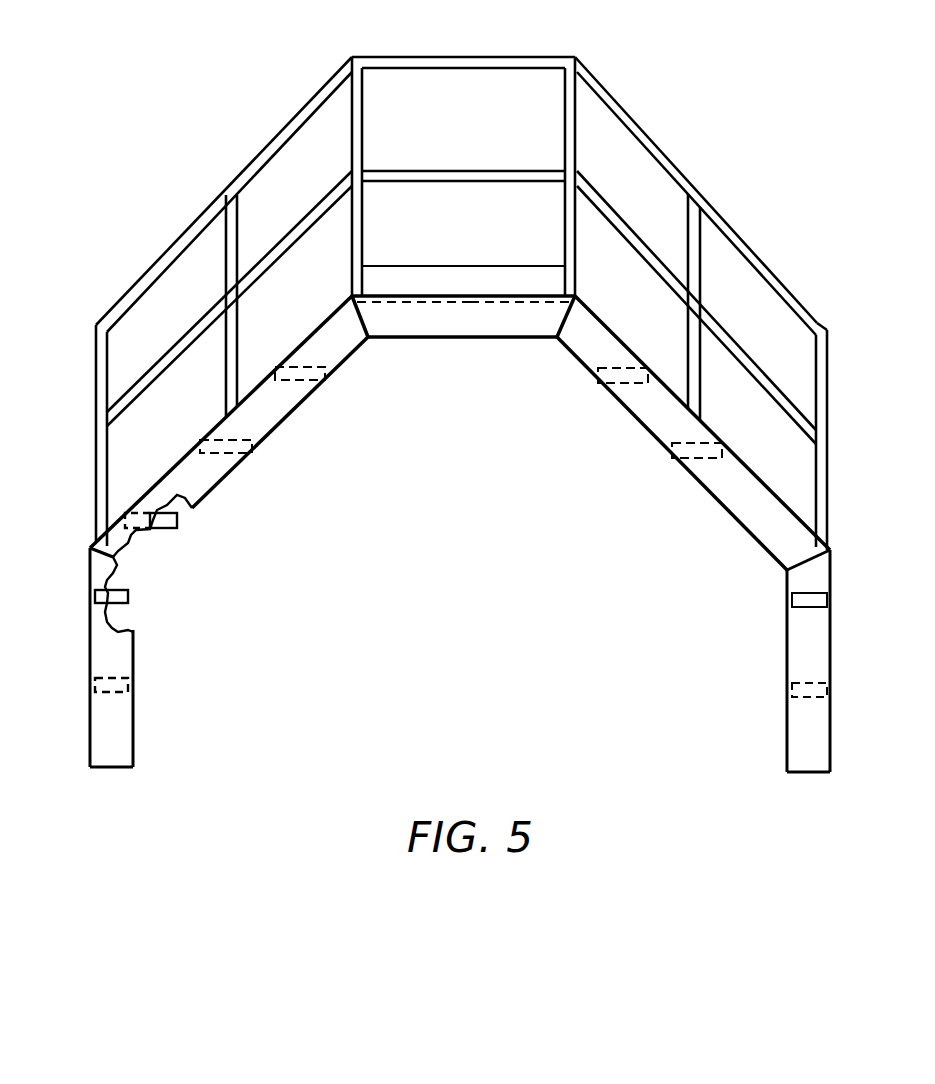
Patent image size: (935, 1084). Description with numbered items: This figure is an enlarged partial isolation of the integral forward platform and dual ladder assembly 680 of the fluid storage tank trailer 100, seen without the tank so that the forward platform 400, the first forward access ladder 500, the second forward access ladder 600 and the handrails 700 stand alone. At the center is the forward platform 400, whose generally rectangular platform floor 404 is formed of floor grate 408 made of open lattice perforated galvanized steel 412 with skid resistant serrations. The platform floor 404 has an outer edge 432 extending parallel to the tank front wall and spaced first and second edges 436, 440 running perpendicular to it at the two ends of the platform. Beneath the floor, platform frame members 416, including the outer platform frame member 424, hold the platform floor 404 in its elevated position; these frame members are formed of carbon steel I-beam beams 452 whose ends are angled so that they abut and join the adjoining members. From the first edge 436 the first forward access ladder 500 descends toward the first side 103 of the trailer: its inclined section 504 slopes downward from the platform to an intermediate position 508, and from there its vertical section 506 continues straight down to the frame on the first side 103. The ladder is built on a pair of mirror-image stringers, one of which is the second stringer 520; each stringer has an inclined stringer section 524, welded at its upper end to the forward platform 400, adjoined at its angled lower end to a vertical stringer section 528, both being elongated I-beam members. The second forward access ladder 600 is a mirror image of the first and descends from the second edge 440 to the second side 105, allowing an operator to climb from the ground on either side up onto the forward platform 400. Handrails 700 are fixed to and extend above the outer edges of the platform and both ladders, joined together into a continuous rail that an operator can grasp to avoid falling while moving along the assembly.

The fluid storage tank trailer 100 is at (483, 752).
The first side 103 is at (81, 656).
The second side 105 is at (838, 727).
The forward platform 400 is at (463, 257).
The platform floor 404 is at (415, 298).
The floor grate 408 is at (540, 369).
The open lattice perforated galvanized steel 412 is at (539, 305).
The platform frame members 416 is at (306, 419).
The outer platform frame member 424 is at (395, 330).
The outer edge 432 is at (459, 305).
The first edge 436 is at (338, 289).
The second edge 440 is at (583, 290).
The beams 452 is at (508, 326).
The first forward access ladder 500 is at (265, 420).
The inclined section 504 is at (257, 430).
The vertical section 506 is at (166, 634).
The vertical stringer section 528 is at (120, 647).
The intermediate position 508 is at (80, 548).
The second stringer 520 is at (264, 422).
The inclined stringer section 524 is at (282, 407).
The second forward access ladder 600 is at (725, 493).
The integral forward platform and dual ladder assembly 680 is at (615, 481).
The handrails 700 is at (642, 122).